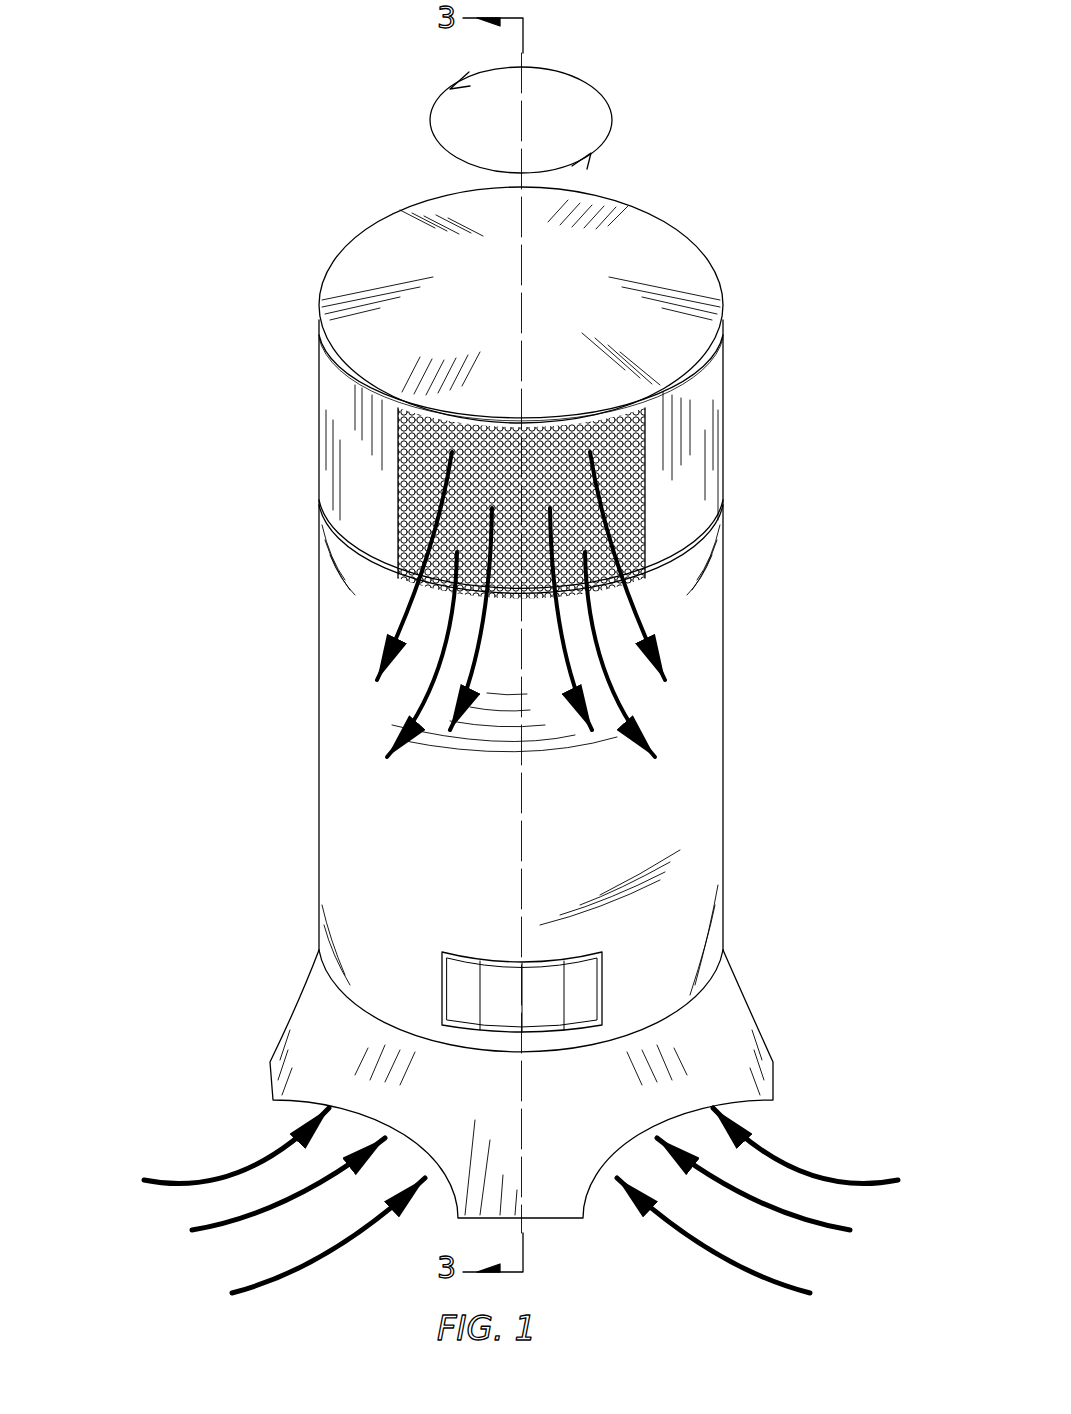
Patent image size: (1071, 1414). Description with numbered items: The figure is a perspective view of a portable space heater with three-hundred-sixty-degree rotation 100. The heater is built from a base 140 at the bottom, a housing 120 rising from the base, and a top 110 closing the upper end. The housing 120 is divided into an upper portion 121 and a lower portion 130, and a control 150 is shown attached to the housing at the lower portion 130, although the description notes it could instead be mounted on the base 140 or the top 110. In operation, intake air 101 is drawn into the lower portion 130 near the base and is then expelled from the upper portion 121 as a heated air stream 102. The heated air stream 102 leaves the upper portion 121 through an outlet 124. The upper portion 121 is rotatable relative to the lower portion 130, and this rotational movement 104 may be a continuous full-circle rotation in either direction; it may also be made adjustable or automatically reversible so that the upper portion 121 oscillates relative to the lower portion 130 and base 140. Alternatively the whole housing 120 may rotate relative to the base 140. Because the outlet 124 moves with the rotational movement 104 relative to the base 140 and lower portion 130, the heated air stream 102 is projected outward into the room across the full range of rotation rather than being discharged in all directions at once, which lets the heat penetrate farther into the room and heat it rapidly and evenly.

The portable space heater with 360° rotation 100 is at (230, 137).
The intake air 101 is at (785, 1162).
The heated air stream 102 is at (395, 622).
The rotational movement 104 is at (605, 97).
The top 110 is at (656, 217).
The housing 120 is at (853, 369).
The upper portion 121 is at (723, 384).
The outlet 124 is at (398, 500).
The lower portion 130 is at (723, 634).
The base 140 is at (750, 1003).
The control 150 is at (603, 970).